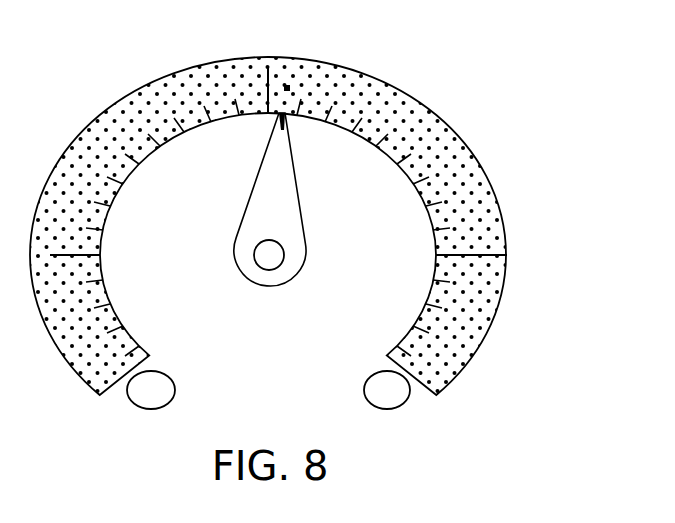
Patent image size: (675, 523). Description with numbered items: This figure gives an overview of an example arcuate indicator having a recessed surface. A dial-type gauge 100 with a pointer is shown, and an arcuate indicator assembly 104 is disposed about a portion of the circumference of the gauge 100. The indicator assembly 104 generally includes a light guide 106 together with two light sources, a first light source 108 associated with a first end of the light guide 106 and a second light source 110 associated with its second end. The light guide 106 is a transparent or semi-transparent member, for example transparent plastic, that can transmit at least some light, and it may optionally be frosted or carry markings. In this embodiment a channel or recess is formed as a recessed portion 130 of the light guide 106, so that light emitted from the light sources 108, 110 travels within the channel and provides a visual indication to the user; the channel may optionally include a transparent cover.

The dial-type gauge 100 is at (263, 283).
The arcuate indicator assembly 104 is at (531, 79).
The light guide 106 is at (243, 57).
The first light source 108 is at (143, 410).
The second light source 110 is at (395, 410).
The recessed portion 130 is at (507, 255).